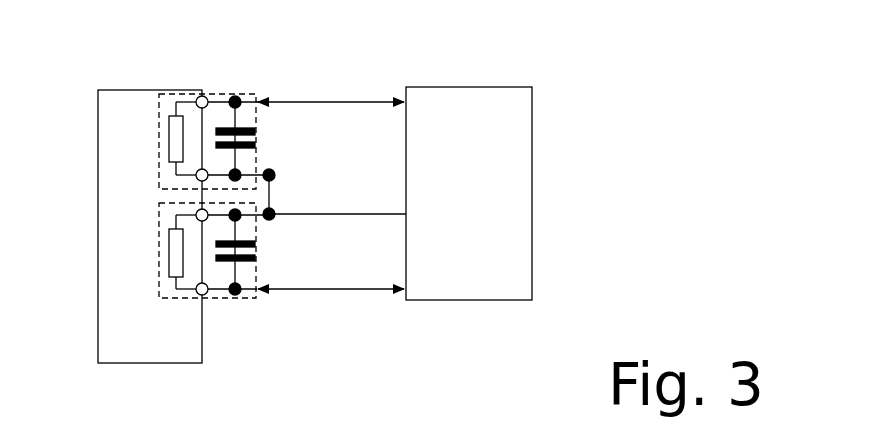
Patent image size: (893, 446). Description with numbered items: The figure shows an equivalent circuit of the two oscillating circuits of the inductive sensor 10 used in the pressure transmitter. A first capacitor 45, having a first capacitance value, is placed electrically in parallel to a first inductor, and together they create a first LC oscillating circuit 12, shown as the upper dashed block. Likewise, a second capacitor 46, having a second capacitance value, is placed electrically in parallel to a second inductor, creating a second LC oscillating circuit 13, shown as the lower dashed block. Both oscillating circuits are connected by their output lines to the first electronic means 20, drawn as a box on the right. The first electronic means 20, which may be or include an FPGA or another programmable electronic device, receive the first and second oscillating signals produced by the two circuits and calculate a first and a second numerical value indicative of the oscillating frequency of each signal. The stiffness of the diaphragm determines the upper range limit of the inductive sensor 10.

The inductive sensor 10 is at (96, 313).
The first LC oscillating circuit 12 is at (222, 92).
The second LC oscillating circuit 13 is at (218, 301).
The first electronic means 20 is at (395, 193).
The first capacitor 45 is at (258, 127).
The second capacitor 46 is at (259, 262).